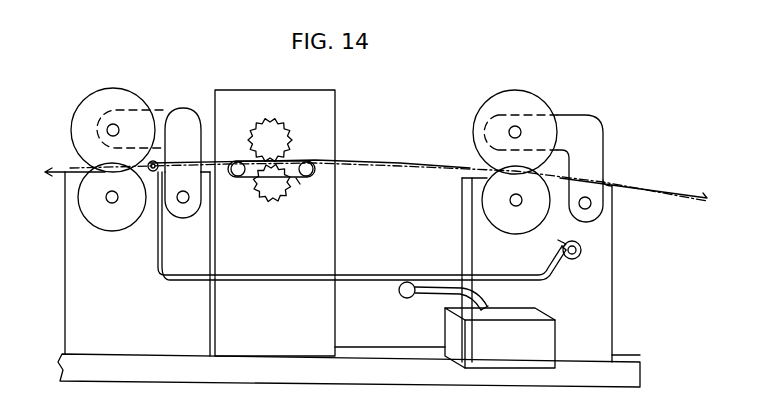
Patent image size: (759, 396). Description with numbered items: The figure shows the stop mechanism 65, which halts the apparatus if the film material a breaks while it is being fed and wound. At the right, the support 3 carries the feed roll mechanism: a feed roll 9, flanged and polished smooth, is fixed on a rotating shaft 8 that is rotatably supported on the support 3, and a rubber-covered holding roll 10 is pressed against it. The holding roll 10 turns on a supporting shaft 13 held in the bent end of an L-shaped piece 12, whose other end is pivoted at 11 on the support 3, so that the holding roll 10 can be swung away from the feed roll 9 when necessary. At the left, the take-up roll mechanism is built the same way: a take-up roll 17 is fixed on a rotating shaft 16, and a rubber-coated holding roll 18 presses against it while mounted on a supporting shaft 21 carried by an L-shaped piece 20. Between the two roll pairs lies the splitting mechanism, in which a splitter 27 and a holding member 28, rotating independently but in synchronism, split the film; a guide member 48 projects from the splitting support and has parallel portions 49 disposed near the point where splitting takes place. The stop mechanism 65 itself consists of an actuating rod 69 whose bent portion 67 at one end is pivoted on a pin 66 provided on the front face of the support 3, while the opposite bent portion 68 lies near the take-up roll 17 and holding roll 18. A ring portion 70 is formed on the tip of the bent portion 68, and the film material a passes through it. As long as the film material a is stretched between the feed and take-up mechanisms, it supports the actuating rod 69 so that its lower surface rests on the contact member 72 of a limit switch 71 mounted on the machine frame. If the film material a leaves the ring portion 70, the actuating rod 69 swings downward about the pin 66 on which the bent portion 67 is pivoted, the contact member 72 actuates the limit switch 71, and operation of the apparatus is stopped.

The support 3 is at (612, 315).
The rotating shaft 8 is at (513, 204).
The feed roll 9 is at (484, 197).
The holding roll 10 is at (488, 112).
The pivot 11 is at (605, 210).
The L-shaped piece 12 is at (603, 140).
The supporting shaft 13 is at (522, 124).
The rotating shaft 16 is at (107, 202).
The take-up roll 17 is at (80, 207).
The holding roll 18 is at (121, 93).
The L-shaped piece 20 is at (200, 116).
The supporting shaft 21 is at (110, 128).
The splitter 27 is at (267, 183).
The holding member 28 is at (277, 130).
The guide member 48 is at (297, 180).
The parallel portions 49 is at (233, 158).
The stop mechanism 65 is at (356, 267).
The pin 66 is at (582, 252).
The bent portion 67 is at (552, 265).
The bent portion 68 is at (165, 253).
The actuating rod 69 is at (392, 275).
The ring portion 70 is at (169, 162).
The limit switch 71 is at (538, 343).
The contact member 72 is at (428, 294).
The film material a is at (397, 163).